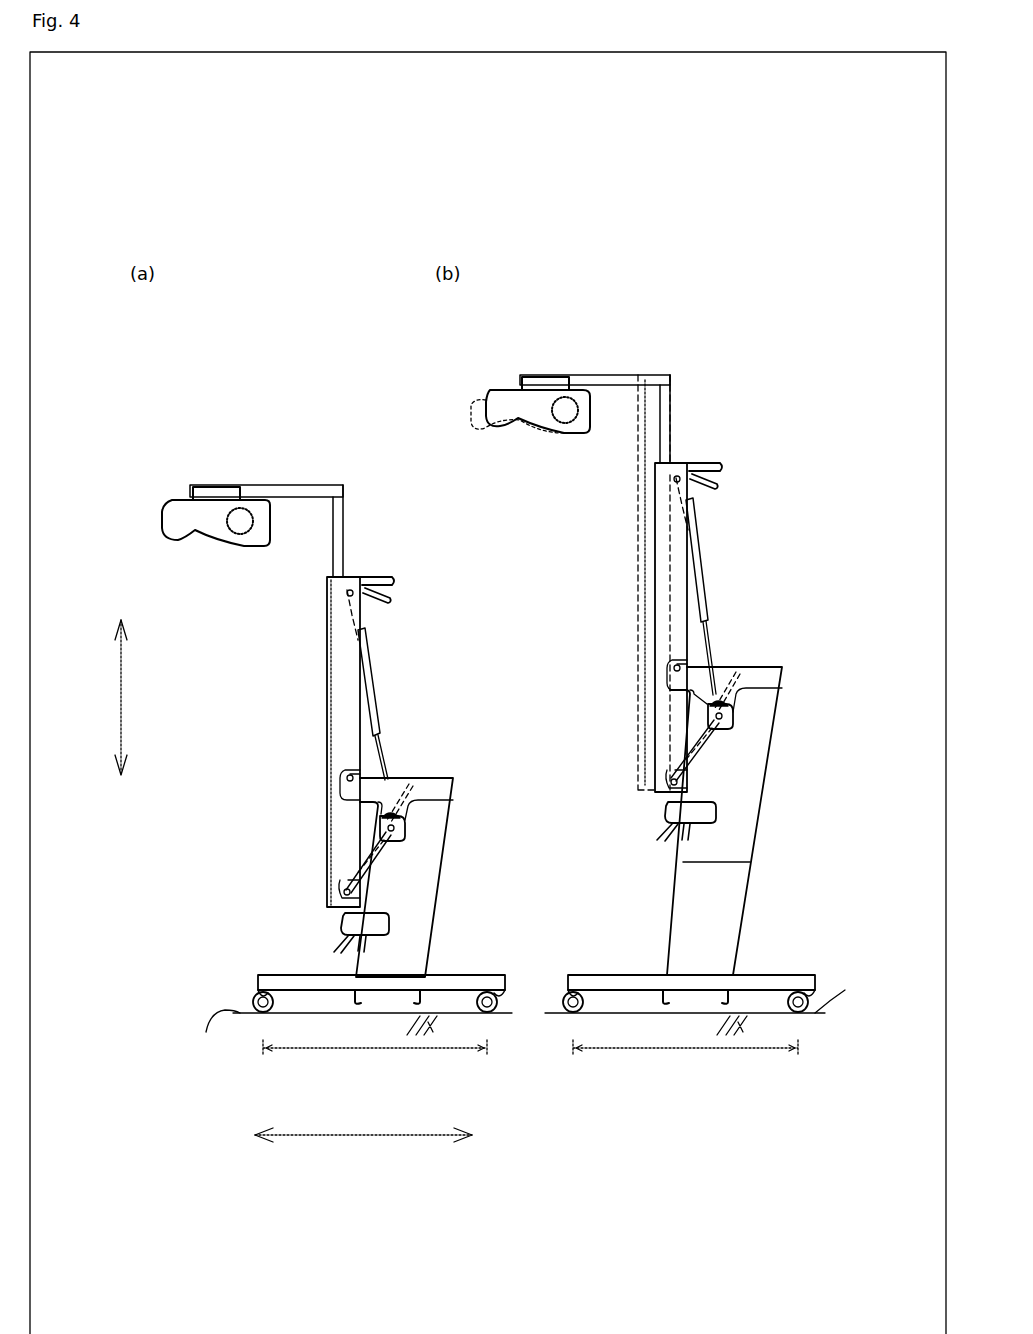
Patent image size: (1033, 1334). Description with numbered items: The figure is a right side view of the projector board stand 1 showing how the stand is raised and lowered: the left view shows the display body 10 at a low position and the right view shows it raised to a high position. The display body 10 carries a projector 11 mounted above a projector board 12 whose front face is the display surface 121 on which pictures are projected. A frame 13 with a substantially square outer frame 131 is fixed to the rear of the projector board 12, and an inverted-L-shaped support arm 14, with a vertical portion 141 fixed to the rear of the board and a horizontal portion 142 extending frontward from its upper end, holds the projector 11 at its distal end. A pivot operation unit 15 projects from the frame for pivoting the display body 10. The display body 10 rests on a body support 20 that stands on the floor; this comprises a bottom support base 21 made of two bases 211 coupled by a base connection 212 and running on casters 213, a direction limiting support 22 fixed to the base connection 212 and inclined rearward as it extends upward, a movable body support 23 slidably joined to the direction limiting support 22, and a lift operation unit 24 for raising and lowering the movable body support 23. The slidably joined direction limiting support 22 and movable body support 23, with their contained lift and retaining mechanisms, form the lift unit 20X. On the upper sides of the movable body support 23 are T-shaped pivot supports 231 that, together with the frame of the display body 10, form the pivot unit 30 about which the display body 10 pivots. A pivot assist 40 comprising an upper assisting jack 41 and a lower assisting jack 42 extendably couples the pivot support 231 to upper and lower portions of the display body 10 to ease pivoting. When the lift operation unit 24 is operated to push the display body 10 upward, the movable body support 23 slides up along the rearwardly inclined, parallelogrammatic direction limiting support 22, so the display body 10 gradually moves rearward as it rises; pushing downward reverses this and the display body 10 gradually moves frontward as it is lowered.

The projector board stand 1 is at (232, 460).
The display body 10 is at (413, 633).
The projector 11 is at (166, 512).
The projector board 12 is at (447, 641).
The display surface 121 is at (327, 720).
The frame 13 is at (458, 627).
The outer frame 131 is at (343, 688).
The support arm 14 is at (348, 480).
The vertical portion 141 is at (344, 528).
The horizontal portion 142 is at (297, 486).
The pivot operation unit 15 is at (406, 560).
The body support 20 is at (615, 818).
The lift unit 20X is at (440, 942).
The bottom support base 21 is at (162, 940).
The base 211 is at (297, 976).
The base connection 212 is at (355, 1000).
The caster 213 is at (250, 995).
The direction limiting support 22 is at (725, 946).
The movable body support 23 is at (436, 842).
The pivot support 231 is at (447, 788).
The lift operation unit 24 is at (325, 925).
The pivot unit 30 is at (400, 760).
The pivot assist 40 is at (610, 695).
The upper assisting jack 41 is at (372, 694).
The lower assisting jack 42 is at (370, 864).